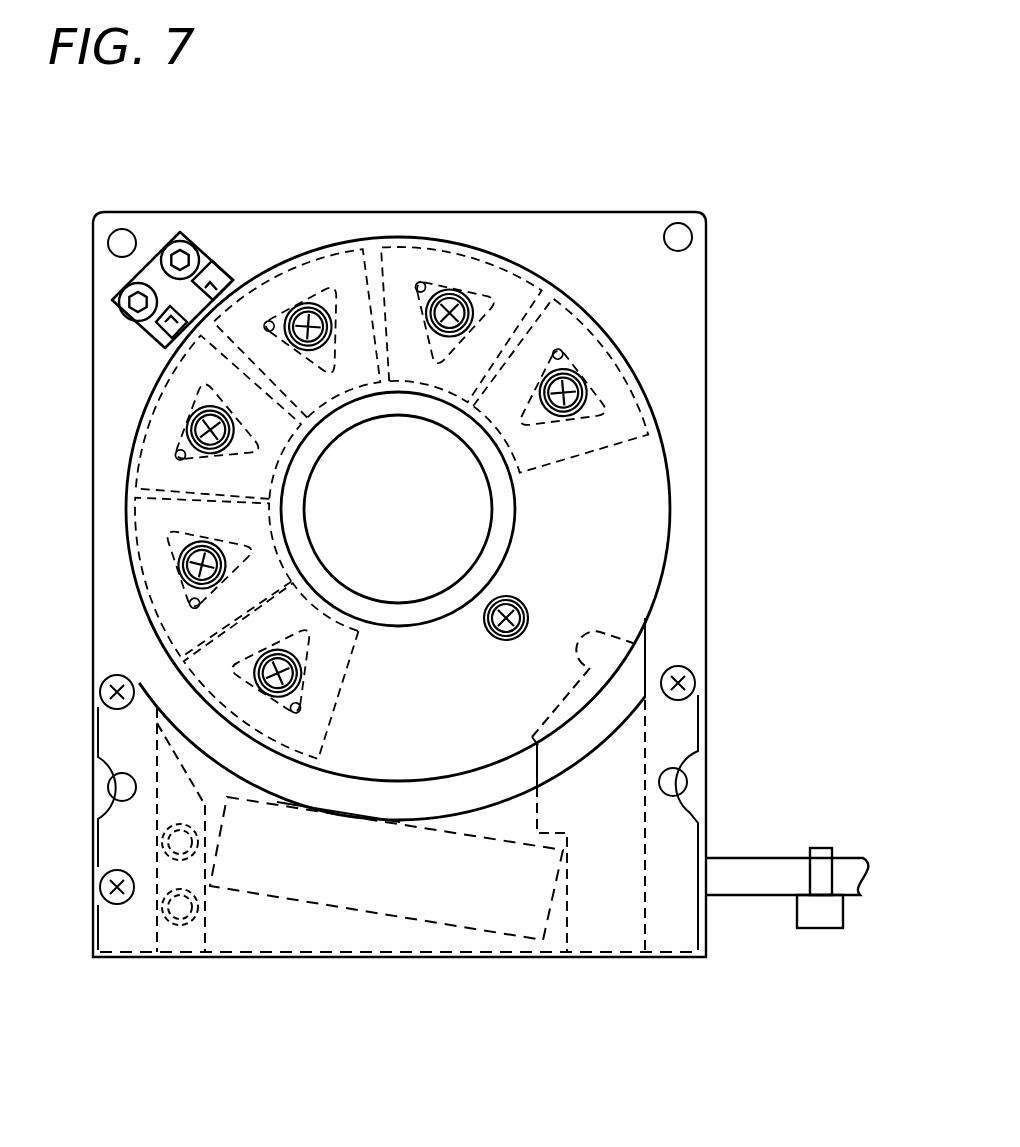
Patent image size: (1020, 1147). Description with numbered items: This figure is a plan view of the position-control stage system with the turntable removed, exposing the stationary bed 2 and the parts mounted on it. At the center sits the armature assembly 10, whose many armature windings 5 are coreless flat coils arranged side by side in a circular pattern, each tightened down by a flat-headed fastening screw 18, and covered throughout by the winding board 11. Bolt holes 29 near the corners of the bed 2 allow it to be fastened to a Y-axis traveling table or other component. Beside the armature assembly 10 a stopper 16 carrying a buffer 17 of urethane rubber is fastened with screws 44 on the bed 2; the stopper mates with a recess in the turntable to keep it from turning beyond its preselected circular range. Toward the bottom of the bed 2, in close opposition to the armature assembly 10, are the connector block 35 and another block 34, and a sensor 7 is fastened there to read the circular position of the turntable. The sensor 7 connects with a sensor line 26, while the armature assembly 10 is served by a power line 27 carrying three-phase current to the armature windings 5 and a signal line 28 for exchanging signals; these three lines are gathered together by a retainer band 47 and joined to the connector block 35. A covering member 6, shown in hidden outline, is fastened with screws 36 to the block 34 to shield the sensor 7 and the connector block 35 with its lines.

The stationary bed 2 is at (598, 248).
The armature windings 5 is at (608, 372).
The covering member 6 is at (280, 917).
The sensor 7 is at (413, 893).
The armature assembly 10 is at (640, 466).
The winding board 11 is at (628, 512).
The stopper 16 is at (157, 278).
The buffer 17 is at (213, 290).
The flat-headed fastening screw 18 is at (450, 316).
The sensor line 26 is at (787, 937).
The power line 27 is at (787, 937).
The signal line 28 is at (763, 887).
The bolt holes 29 is at (680, 232).
The block 34 is at (138, 920).
The connector block 35 is at (633, 907).
The screws 36 is at (683, 686).
The screws 44 is at (180, 258).
The retainer band 47 is at (820, 874).